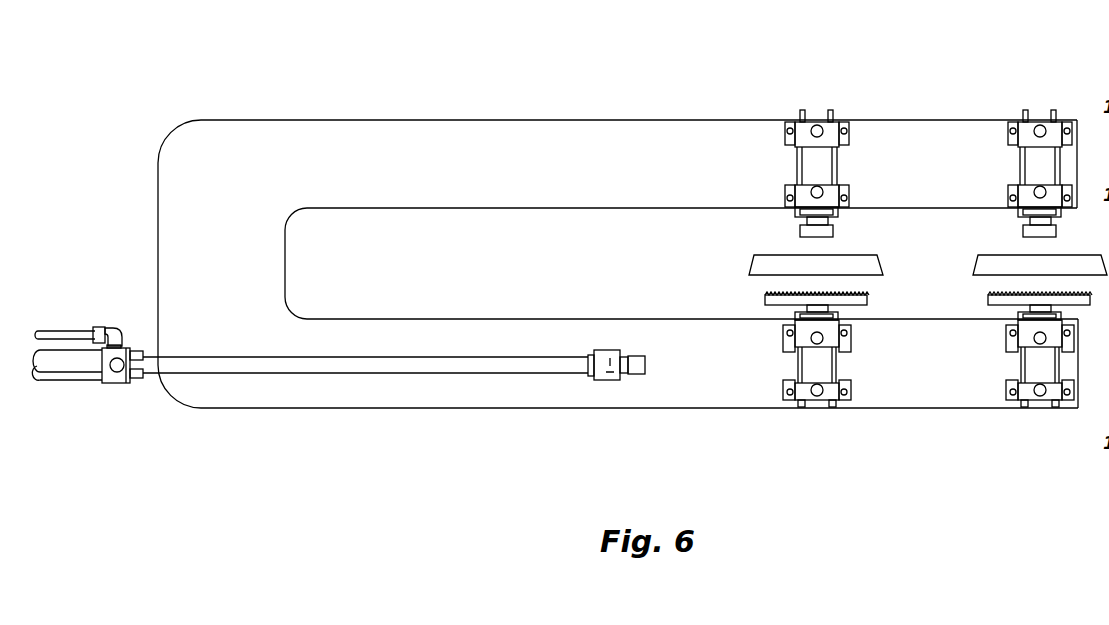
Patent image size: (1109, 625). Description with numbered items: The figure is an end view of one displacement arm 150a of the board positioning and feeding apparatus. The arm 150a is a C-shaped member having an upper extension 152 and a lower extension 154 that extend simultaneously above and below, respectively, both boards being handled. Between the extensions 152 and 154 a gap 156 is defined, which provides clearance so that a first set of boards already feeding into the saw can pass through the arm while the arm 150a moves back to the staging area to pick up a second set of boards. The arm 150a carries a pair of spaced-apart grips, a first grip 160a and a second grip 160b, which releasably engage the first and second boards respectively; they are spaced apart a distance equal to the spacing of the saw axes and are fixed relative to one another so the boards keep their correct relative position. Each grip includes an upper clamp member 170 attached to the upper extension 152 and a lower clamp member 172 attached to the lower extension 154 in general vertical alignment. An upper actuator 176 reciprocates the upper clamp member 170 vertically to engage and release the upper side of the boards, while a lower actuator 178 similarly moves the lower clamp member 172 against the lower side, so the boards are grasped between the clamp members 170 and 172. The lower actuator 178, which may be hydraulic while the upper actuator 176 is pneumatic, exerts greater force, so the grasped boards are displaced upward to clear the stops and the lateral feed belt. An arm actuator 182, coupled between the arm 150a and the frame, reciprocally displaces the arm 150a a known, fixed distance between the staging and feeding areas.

The displacement arm 150a is at (283, 120).
The upper extension 152 is at (488, 120).
The lower extension 154 is at (455, 410).
The gap 156 is at (372, 273).
The first grip 160a is at (795, 128).
The second grip 160b is at (1034, 118).
The upper clamp member 170 is at (748, 234).
The lower clamp member 172 is at (764, 292).
The upper actuator 176 is at (862, 121).
The lower actuator 178 is at (866, 412).
The arm actuator 182 is at (75, 384).